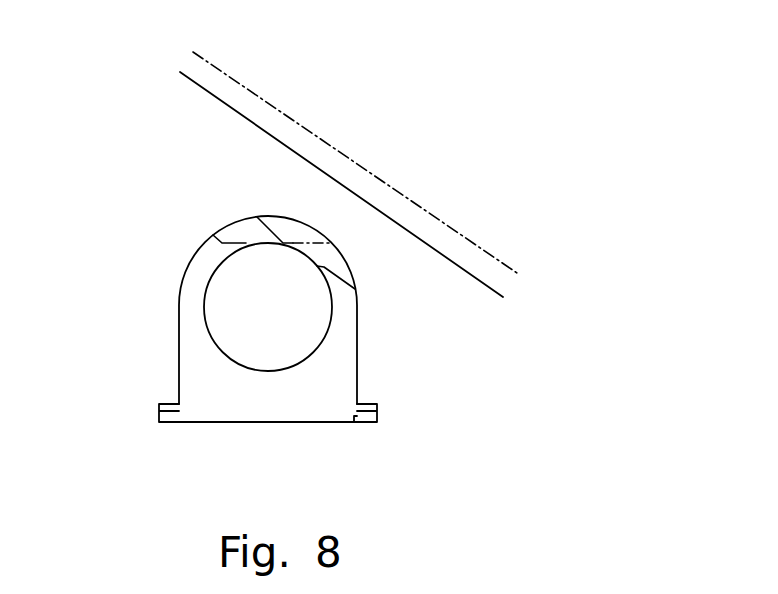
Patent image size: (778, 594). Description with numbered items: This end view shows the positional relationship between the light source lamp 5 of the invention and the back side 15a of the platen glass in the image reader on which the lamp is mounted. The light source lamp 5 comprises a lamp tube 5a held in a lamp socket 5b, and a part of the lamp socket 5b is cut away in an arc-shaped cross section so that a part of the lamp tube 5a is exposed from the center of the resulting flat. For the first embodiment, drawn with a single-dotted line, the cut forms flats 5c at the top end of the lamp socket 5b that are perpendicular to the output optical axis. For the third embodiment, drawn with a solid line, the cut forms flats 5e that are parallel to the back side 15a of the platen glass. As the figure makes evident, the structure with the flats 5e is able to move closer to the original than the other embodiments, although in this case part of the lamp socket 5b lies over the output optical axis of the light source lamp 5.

The light source lamp 5 is at (170, 200).
The lamp tube 5a is at (217, 300).
The lamp socket 5b is at (343, 388).
The flats 5c is at (208, 231).
The flats 5e is at (337, 278).
The back side of the platen glass 15a is at (280, 143).